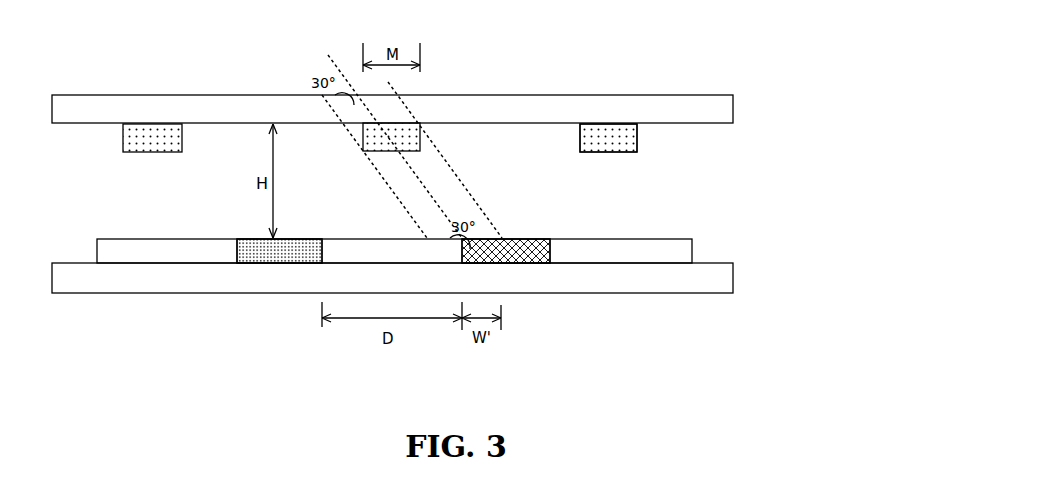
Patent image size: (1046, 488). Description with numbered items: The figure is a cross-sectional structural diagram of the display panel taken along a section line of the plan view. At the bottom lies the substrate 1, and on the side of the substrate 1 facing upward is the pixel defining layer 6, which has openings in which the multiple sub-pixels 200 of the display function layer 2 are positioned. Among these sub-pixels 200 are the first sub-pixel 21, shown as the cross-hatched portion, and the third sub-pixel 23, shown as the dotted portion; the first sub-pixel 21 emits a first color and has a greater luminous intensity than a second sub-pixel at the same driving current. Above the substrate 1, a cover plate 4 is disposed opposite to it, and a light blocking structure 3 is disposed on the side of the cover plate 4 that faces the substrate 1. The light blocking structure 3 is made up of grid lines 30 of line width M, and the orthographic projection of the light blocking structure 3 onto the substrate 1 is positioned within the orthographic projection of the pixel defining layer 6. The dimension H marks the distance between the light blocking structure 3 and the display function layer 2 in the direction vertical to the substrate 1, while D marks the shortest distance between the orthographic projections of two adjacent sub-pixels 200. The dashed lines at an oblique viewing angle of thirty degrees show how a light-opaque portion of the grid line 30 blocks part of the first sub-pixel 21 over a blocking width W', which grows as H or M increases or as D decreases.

The substrate 1 is at (732, 280).
The display function layer 2 is at (539, 254).
The first sub-pixel 21 is at (527, 257).
The third sub-pixel 23 is at (247, 250).
The sub-pixels 200 is at (278, 250).
The light blocking structure 3 is at (637, 137).
The grid line 30 is at (608, 134).
The cover plate 4 is at (732, 107).
The pixel defining layer 6 is at (645, 253).